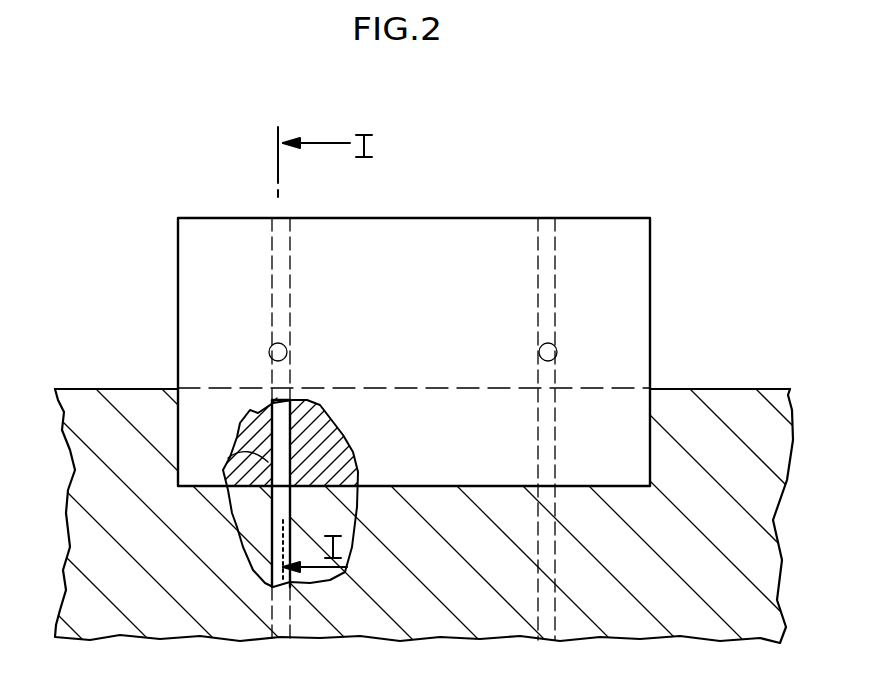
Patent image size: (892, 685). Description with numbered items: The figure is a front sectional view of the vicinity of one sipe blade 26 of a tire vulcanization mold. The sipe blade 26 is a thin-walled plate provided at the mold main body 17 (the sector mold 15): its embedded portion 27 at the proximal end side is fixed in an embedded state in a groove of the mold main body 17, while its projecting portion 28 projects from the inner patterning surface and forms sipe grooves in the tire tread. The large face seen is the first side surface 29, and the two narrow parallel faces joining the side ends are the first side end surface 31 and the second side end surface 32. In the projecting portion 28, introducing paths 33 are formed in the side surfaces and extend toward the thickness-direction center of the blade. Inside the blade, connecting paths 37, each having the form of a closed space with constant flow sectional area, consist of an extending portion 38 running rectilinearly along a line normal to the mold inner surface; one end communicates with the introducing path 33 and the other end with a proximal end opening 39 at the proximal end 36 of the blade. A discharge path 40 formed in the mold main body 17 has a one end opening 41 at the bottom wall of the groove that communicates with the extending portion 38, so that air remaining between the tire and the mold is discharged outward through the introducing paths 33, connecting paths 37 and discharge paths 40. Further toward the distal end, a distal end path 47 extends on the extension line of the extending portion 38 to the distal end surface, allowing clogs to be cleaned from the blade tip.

The sector mold 15 is at (78, 408).
The mold main body 17 is at (740, 389).
The sipe blade 26 is at (455, 217).
The embedded portion 27 is at (638, 413).
The projecting portion 28 is at (627, 238).
The first side surface 29 is at (417, 245).
The first side end surface 31 is at (177, 262).
The second side end surface 32 is at (652, 282).
The introducing path 33 is at (269, 350).
The proximal end 36 is at (404, 493).
The connecting path 37 is at (253, 417).
The extending portion 38 is at (293, 452).
The proximal end opening 39 is at (240, 503).
The discharge path 40 is at (294, 512).
The one end opening 41 is at (228, 458).
The distal end path 47 is at (270, 253).